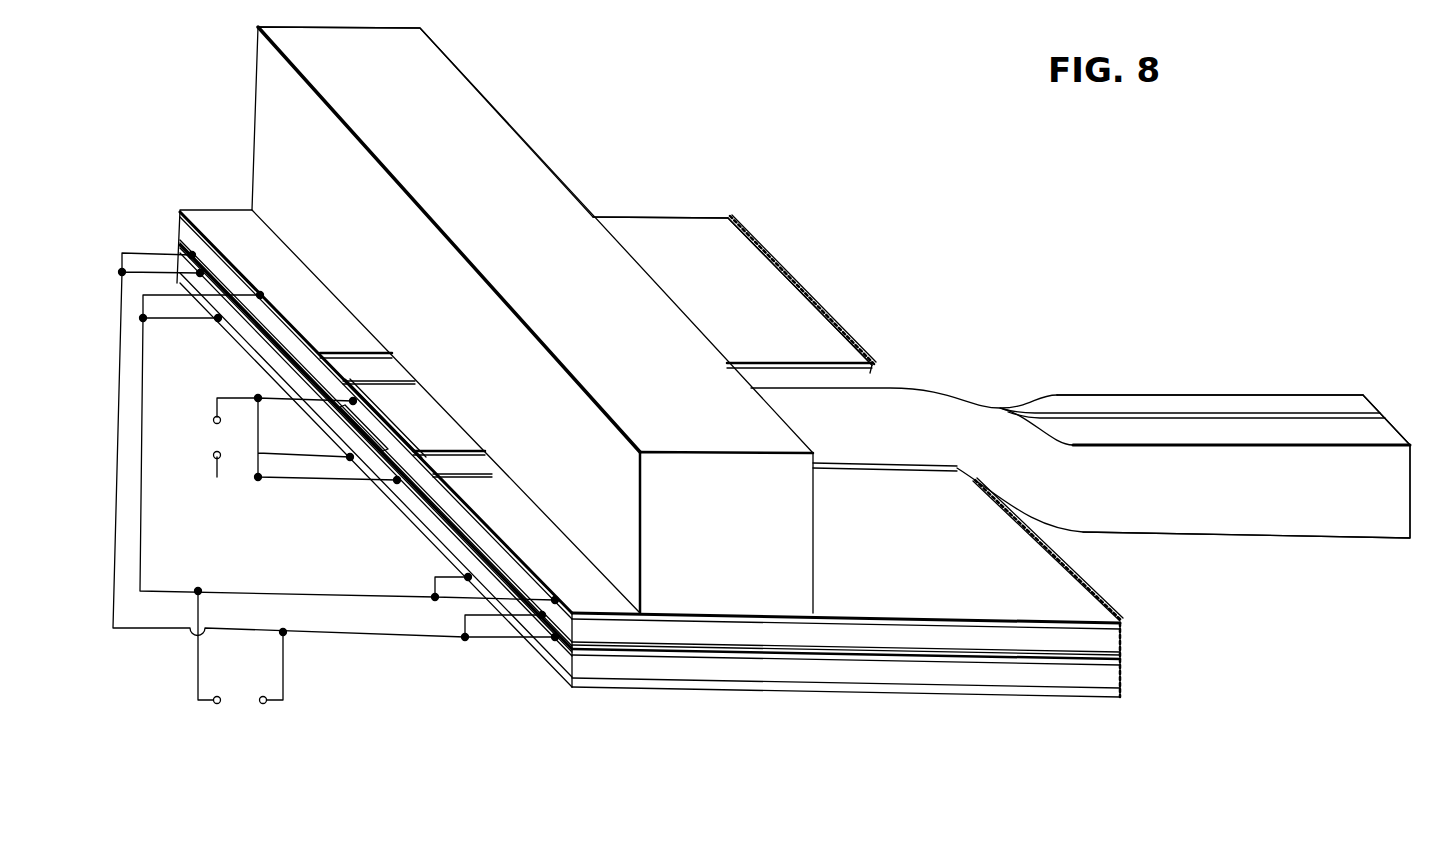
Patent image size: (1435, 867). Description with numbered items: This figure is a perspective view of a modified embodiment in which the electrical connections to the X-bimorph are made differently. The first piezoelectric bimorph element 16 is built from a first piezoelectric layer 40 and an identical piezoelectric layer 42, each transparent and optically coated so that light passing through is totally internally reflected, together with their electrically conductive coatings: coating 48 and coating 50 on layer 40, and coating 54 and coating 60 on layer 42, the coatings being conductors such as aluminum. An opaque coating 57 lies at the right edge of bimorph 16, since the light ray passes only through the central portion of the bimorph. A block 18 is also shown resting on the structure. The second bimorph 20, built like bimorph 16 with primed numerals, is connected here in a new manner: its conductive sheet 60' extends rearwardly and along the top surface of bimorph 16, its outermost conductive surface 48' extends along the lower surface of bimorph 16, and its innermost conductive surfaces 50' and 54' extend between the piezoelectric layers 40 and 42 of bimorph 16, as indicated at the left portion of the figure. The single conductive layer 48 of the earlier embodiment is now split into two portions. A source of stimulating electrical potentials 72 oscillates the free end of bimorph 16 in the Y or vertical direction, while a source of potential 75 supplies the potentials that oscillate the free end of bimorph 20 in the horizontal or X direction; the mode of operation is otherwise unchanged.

The first piezoelectric bimorph element 16 is at (637, 209).
The prism block 18 is at (541, 250).
The bimorph 20 is at (1229, 370).
The first piezoelectric layer 40 is at (843, 640).
The piezoelectric layer 42 is at (910, 680).
The electrically conductive coating 48 is at (568, 415).
The conductive layer 48' is at (845, 435).
The electrically conductive coating 50 is at (376, 444).
The conductive layer 50' is at (846, 405).
The electrically conductive coating 54 is at (376, 450).
The conductive layer 54' is at (890, 418).
The opaque coating 57 is at (816, 298).
The electrically conductive coating 60 is at (650, 487).
The conductive sheet 60' is at (922, 461).
The source of stimulating electrical potentials 72 is at (242, 711).
The source of potential 75 is at (198, 433).